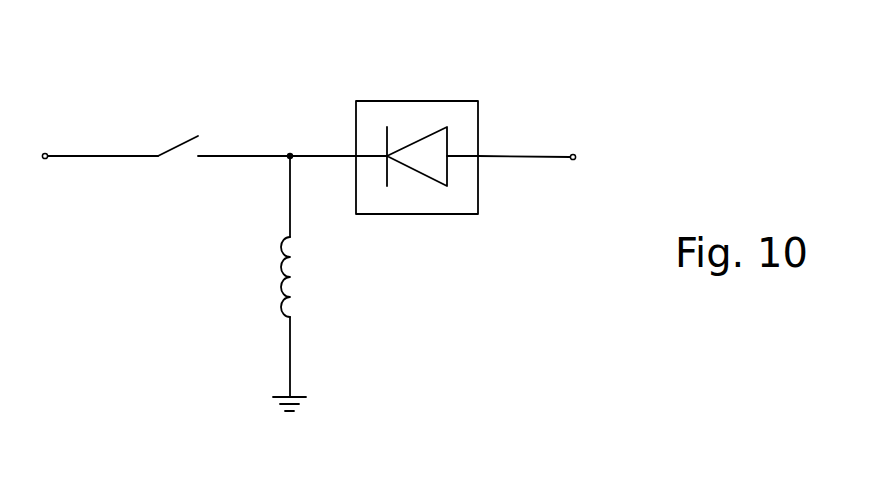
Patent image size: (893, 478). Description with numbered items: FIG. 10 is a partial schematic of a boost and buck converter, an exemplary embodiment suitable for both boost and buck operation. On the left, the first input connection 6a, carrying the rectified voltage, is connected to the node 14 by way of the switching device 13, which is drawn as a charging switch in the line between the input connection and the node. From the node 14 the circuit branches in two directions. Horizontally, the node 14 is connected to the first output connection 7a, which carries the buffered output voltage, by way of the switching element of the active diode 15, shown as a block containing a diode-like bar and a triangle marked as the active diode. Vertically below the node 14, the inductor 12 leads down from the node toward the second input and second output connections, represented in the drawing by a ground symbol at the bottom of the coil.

The first input connection 6a is at (47, 161).
The switching device 13 is at (156, 131).
The node 14 is at (288, 158).
The active diode 15 is at (419, 205).
The inductor 12 is at (306, 295).
The first output connection 7a is at (576, 156).